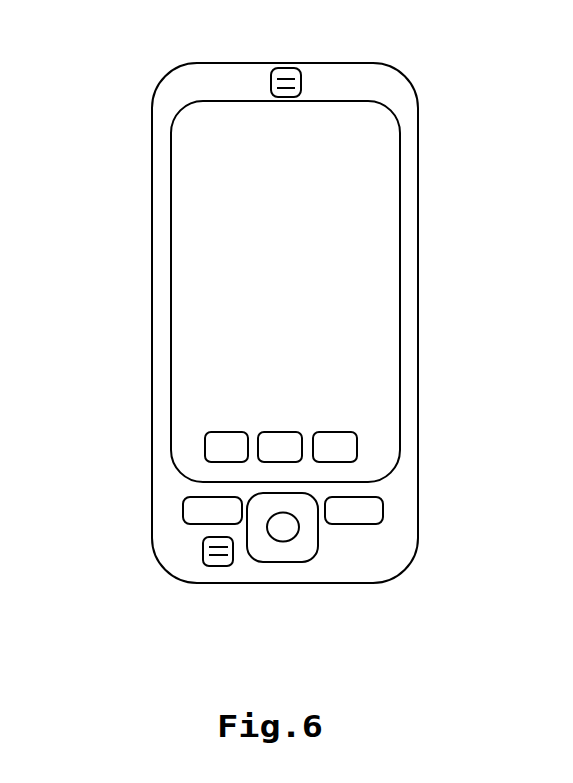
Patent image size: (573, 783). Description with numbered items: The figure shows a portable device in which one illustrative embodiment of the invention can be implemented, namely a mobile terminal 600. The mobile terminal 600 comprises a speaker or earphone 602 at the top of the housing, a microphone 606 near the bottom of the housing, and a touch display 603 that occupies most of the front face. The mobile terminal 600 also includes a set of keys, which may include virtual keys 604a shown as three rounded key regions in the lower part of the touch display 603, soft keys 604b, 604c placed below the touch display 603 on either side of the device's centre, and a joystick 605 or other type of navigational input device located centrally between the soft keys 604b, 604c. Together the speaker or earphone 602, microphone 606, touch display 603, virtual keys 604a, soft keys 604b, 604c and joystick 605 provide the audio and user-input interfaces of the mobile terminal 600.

The mobile terminal 600 is at (128, 133).
The speaker or earphone 602 is at (284, 68).
The touch display 603 is at (400, 207).
The virtual keys 604a is at (183, 447).
The soft key 604b is at (183, 512).
The soft key 604c is at (383, 517).
The joystick 605 is at (318, 535).
The microphone 606 is at (212, 568).